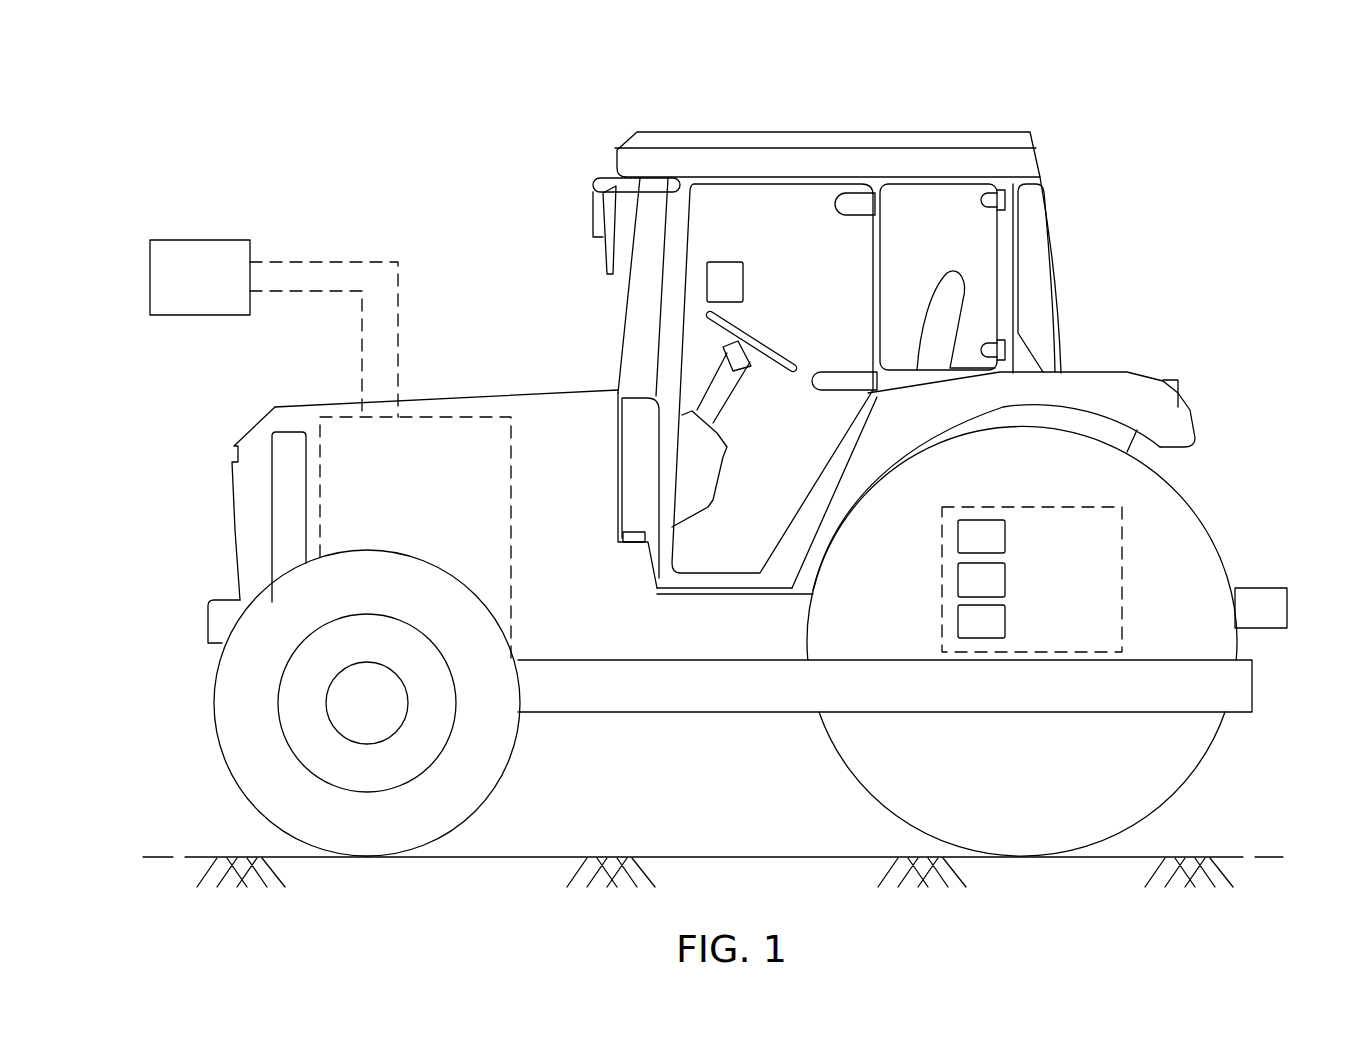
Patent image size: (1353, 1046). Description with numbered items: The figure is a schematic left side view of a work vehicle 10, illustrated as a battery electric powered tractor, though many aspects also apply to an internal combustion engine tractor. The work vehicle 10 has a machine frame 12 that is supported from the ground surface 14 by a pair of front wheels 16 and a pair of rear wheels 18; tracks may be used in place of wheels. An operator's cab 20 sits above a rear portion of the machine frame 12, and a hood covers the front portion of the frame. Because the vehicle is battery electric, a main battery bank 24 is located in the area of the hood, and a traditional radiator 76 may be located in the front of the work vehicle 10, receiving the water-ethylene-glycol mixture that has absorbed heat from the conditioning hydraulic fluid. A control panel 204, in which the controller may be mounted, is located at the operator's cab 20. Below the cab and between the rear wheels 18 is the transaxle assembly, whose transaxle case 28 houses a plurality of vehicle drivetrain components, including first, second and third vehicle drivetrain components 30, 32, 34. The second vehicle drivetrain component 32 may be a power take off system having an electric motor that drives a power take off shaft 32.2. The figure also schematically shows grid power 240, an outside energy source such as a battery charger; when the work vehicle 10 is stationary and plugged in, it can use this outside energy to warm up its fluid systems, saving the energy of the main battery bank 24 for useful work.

The work vehicle 10 is at (376, 95).
The machine frame 12 is at (572, 680).
The ground surface 14 is at (203, 857).
The front wheels 16 is at (242, 710).
The rear wheels 18 is at (885, 765).
The operator's cab 20 is at (1048, 248).
The main battery bank 24 is at (423, 499).
The grid power 240 is at (226, 289).
The radiator 76 is at (292, 501).
The control panel 204 is at (738, 281).
The transaxle case 28 is at (1047, 503).
The first vehicle drivetrain component 30 is at (1006, 541).
The second vehicle drivetrain component 32 is at (1006, 584).
The third vehicle drivetrain component 34 is at (1006, 626).
The power take off shaft 32.2 is at (1257, 605).